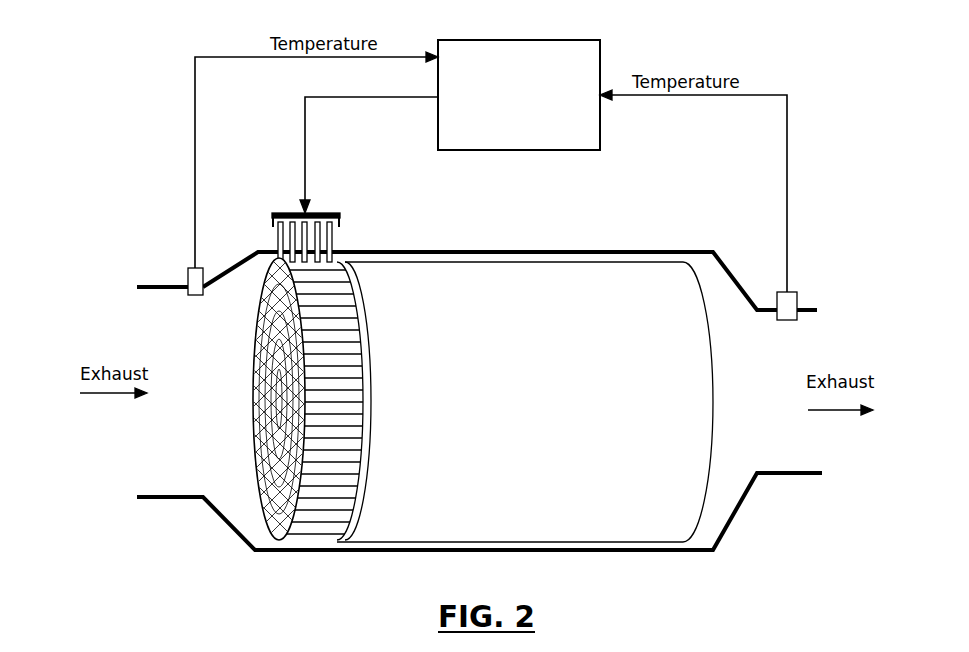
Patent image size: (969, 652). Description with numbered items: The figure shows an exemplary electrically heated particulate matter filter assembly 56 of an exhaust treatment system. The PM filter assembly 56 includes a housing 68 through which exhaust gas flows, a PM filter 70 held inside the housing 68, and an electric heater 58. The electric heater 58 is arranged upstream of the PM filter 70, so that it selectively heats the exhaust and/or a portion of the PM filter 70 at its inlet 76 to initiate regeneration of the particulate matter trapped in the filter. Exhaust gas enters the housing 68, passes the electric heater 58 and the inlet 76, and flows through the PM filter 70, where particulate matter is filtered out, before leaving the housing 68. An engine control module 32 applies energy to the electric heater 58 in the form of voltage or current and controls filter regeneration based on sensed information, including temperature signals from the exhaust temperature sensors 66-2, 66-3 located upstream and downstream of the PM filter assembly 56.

The engine control module 32 is at (521, 40).
The particulate matter filter assembly 56 is at (137, 176).
The electric heater 58 is at (253, 403).
The exhaust temperature sensor 66-2 is at (191, 268).
The exhaust temperature sensor 66-3 is at (790, 292).
The housing 68 is at (545, 252).
The PM filter 70 is at (716, 403).
The inlet 76 is at (363, 391).